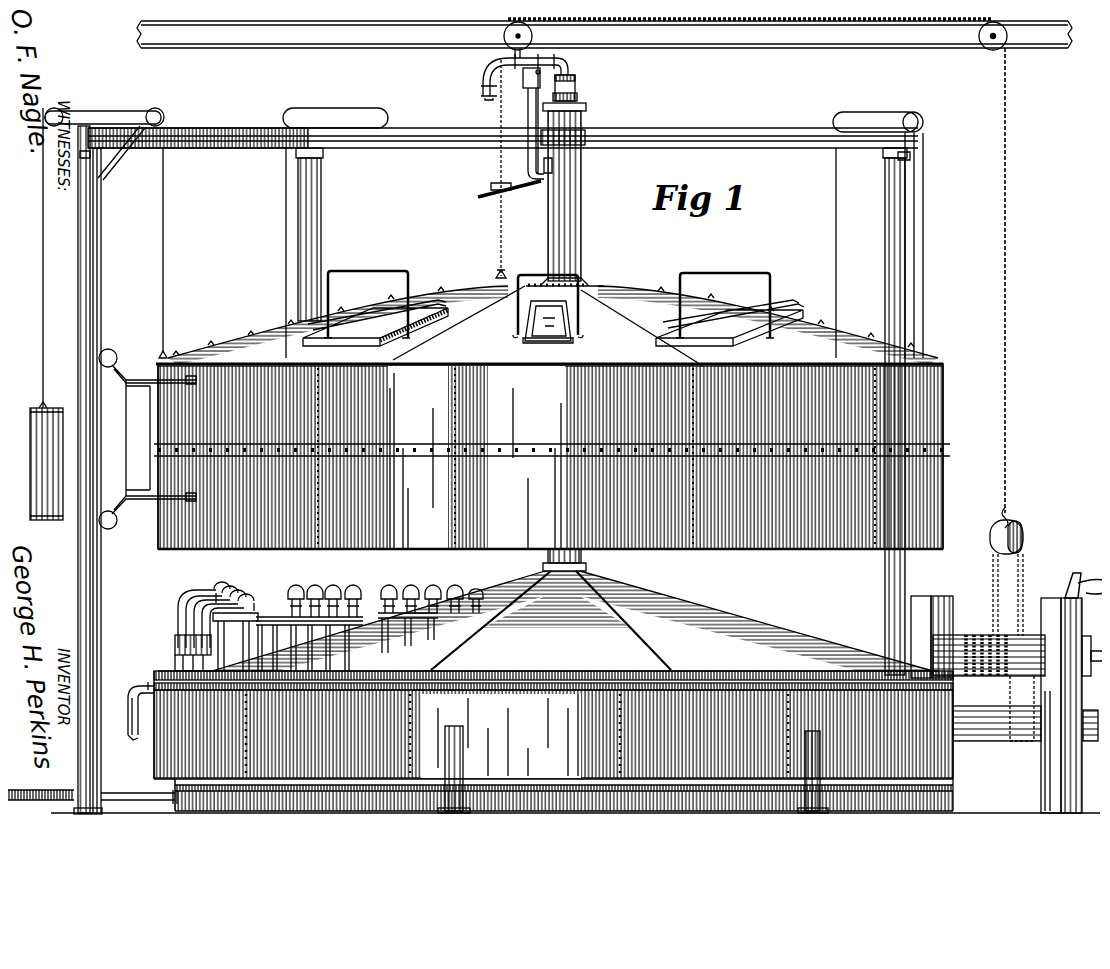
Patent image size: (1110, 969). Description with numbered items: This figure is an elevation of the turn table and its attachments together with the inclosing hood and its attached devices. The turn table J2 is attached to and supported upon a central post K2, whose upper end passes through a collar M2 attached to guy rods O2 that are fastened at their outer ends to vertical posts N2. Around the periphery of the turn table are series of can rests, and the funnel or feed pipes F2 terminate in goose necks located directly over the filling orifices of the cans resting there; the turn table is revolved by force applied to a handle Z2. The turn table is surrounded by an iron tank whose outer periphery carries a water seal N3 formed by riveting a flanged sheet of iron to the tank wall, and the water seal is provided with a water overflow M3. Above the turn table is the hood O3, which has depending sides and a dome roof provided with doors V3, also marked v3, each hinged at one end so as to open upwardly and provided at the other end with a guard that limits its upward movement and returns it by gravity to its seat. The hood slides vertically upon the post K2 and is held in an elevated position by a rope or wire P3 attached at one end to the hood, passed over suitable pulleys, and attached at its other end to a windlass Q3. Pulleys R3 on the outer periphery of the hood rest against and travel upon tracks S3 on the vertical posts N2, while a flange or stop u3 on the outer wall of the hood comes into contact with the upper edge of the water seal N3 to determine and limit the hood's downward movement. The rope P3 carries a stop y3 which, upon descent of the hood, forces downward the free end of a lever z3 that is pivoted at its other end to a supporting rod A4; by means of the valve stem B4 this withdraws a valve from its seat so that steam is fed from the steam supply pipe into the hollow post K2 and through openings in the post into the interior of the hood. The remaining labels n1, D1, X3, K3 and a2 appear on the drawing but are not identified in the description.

The rope or wire P3 is at (1007, 246).
The guy rods O2 is at (715, 156).
The vertical posts N2 is at (878, 240).
The tracks S3 is at (878, 194).
The post cap bracket n1 is at (289, 195).
The central post K2 is at (573, 207).
The collar M2 is at (572, 120).
The elbow pipe D1 is at (475, 90).
The valve stem B4 is at (525, 123).
The supporting rod A4 is at (544, 155).
The stop y3 is at (484, 177).
The lever z3 is at (509, 195).
The hood O3 is at (210, 332).
The flange or stop u3 is at (940, 444).
The pulleys R3 is at (103, 520).
The doors v3 is at (708, 286).
The doors V3 is at (556, 309).
The slab plate X3 is at (580, 319).
The turn table J2 is at (548, 621).
The water seal N3 is at (553, 741).
The lower kettle base band K3 is at (522, 802).
The funnel or feed pipes F2 is at (385, 579).
The burner supply pipes a2 is at (203, 577).
The handle Z2 is at (165, 636).
The water overflow M3 is at (120, 736).
The windlass Q3 is at (952, 620).